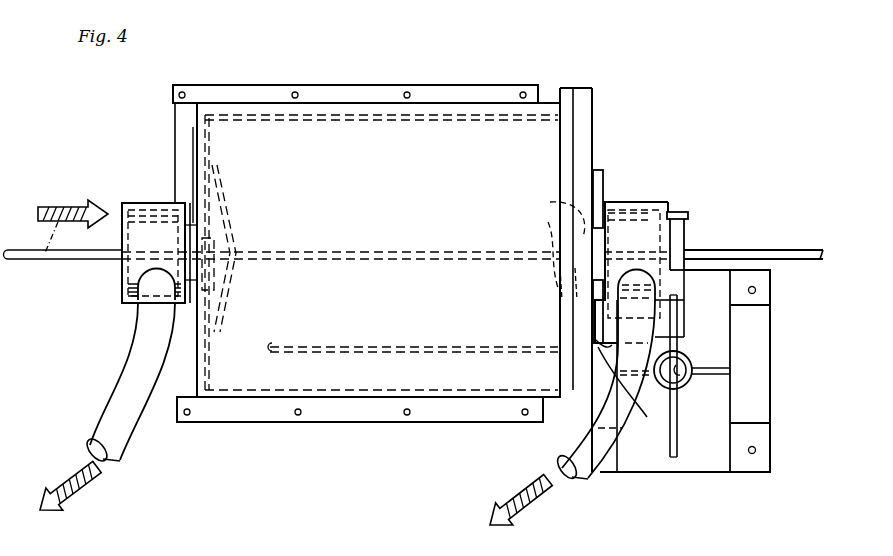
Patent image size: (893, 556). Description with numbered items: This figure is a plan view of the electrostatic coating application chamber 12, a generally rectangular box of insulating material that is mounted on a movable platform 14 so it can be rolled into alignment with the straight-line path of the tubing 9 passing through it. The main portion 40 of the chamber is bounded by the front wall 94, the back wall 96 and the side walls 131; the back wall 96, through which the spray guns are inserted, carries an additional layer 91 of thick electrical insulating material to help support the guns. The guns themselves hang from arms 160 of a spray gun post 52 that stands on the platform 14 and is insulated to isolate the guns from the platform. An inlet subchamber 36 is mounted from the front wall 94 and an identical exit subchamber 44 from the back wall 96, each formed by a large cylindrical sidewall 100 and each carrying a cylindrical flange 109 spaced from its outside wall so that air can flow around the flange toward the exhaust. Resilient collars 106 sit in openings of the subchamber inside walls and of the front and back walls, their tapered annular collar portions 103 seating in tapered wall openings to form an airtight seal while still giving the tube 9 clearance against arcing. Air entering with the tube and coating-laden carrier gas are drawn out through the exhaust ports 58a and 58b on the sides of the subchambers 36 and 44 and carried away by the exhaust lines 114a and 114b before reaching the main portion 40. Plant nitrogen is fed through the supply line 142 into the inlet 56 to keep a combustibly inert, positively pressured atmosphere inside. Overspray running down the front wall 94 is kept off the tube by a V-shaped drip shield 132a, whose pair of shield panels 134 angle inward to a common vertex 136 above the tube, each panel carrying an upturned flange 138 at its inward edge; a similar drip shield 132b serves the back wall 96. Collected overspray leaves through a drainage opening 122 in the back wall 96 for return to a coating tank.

The coating application chamber 12 is at (462, 32).
The main portion 40 is at (367, 63).
The movable platform 14 is at (367, 413).
The side walls 131 is at (320, 392).
The back wall 96 is at (568, 87).
The additional layer 91 is at (585, 92).
The front wall 94 is at (195, 127).
The collars 106 is at (192, 222).
The cylindrical sidewall 100 is at (128, 190).
The inlet subchamber 36 is at (147, 180).
The exhaust port 58a is at (137, 320).
The exhaust line 114a is at (133, 445).
The V-shaped drip shield 132a is at (230, 202).
The flange 138 is at (227, 232).
The common vertex 136 is at (234, 265).
The shield panels 134 is at (228, 314).
The tubing 9 is at (380, 210).
The annular collar portions 103 is at (556, 209).
The drip shield 132b is at (555, 255).
The drainage opening 122 is at (573, 403).
The exit subchamber 44 is at (618, 202).
The cylindrical flange 109 is at (657, 200).
The arms 160 is at (680, 238).
The inlet 56 is at (685, 371).
The spray gun post 52 is at (687, 387).
The exhaust port 58b is at (627, 312).
The supply line 142 is at (645, 400).
The exhaust line 114b is at (581, 480).